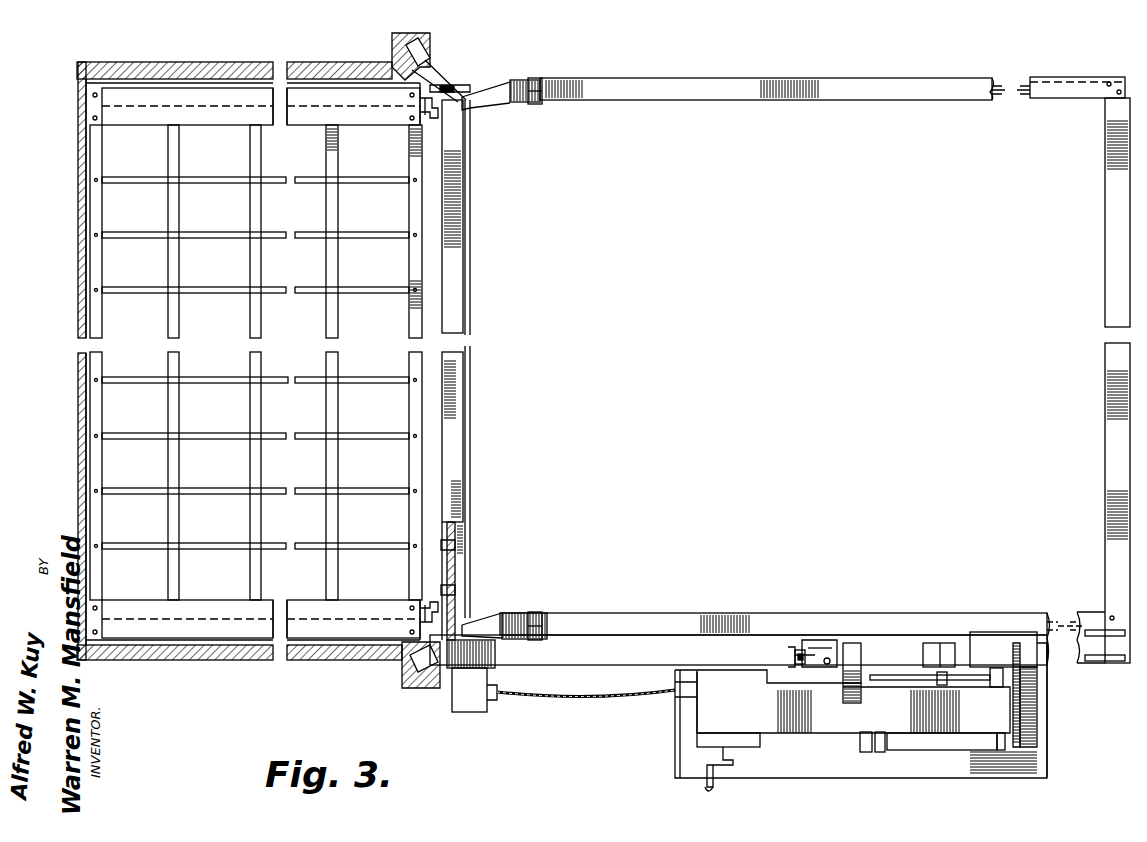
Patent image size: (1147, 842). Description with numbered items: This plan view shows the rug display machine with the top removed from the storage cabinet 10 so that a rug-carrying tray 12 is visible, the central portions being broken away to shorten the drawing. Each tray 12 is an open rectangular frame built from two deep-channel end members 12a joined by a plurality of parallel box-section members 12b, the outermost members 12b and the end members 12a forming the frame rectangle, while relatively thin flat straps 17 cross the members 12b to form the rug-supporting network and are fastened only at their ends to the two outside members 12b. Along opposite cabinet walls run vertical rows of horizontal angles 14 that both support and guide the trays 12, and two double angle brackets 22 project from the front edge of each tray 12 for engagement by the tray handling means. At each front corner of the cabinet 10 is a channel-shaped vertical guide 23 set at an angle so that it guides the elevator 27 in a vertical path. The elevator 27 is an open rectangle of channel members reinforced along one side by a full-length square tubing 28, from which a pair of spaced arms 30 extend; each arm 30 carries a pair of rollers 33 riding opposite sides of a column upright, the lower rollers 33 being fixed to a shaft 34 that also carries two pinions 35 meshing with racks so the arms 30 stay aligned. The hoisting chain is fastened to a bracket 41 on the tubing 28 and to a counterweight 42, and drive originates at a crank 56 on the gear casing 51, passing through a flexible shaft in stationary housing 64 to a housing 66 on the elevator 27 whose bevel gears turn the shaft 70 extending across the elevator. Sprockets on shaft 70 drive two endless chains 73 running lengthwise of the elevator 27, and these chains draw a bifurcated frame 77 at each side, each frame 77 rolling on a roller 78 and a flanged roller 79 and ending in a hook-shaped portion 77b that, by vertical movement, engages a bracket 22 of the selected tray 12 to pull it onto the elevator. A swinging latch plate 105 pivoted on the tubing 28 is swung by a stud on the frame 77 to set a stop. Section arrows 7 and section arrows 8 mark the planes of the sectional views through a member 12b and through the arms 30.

The storage cabinet 10 is at (78, 128).
The rug-carrying tray 12 is at (108, 212).
The end member 12a is at (200, 95).
The parallel member 12b is at (175, 325).
The angle 14 is at (120, 118).
The strap 17 is at (240, 178).
The double angle bracket 22 is at (443, 140).
The guide 23 is at (392, 46).
The elevator 27 is at (845, 100).
The square tubing 28 is at (662, 635).
The arm 30 is at (862, 690).
The roller 33 is at (855, 643).
The shaft 34 is at (902, 675).
The pinion 35 is at (980, 632).
The bracket 41 is at (948, 643).
The counterweight 42 is at (915, 760).
The gear casing 51 is at (760, 740).
The crank 56 is at (708, 790).
The stationary housing 64 is at (600, 698).
The housing 66 is at (476, 712).
The shaft 70 is at (470, 357).
The endless chain 73 is at (998, 100).
The bifurcated frame 77 is at (512, 110).
The hook-shaped portion 77b is at (440, 110).
The roller 78 is at (448, 85).
The roller 79 is at (548, 84).
The swinging latch plate 105 is at (822, 640).
The section line 7 is at (174, 136).
The section line 8 is at (1093, 140).